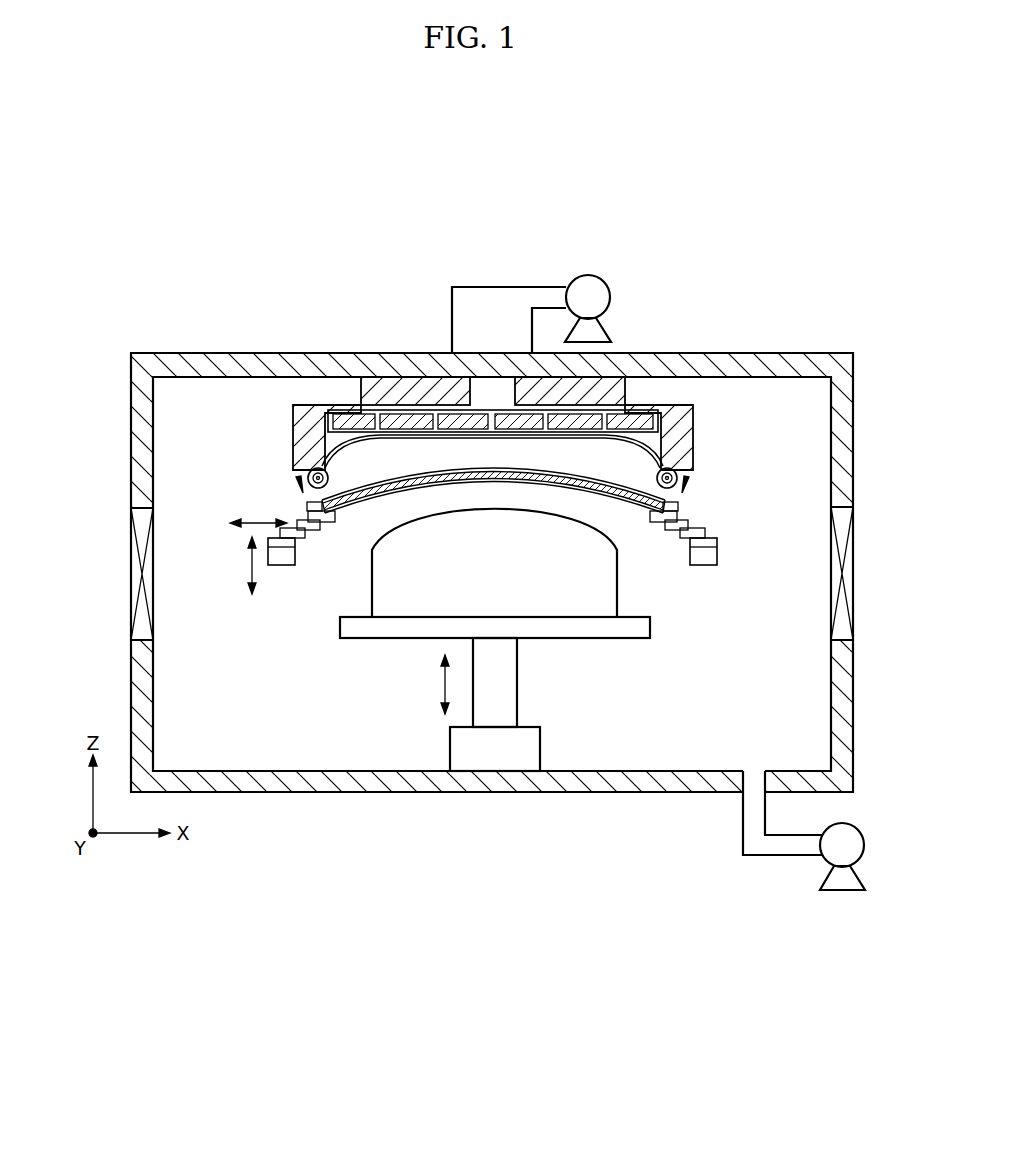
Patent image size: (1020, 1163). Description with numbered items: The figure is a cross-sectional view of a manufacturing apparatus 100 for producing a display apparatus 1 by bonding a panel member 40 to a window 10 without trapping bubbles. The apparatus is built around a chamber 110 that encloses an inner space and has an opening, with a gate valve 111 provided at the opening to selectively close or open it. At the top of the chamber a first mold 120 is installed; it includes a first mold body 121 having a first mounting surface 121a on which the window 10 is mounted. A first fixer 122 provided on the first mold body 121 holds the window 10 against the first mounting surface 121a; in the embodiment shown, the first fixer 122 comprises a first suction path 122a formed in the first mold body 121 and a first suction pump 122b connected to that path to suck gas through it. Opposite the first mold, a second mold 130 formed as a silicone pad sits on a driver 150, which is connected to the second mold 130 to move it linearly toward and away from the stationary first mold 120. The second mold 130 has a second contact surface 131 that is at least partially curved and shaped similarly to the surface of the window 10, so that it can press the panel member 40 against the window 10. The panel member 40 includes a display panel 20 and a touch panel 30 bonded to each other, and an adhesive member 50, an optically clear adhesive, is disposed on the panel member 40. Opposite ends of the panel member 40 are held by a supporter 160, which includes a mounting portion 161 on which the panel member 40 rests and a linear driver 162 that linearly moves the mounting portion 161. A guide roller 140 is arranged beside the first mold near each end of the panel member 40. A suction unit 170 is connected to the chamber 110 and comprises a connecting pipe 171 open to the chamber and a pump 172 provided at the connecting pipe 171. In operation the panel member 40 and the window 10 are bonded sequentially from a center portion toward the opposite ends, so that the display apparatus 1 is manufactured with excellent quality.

The display apparatus 1 is at (571, 523).
The window 10 is at (689, 455).
The display panel 20 is at (648, 512).
The touch panel 30 is at (660, 518).
The panel member 40 is at (557, 542).
The adhesive member 50 is at (683, 498).
The manufacturing apparatus 100 is at (272, 286).
The chamber 110 is at (797, 366).
The gate valve 111 is at (134, 580).
The first mold 120 is at (496, 308).
The first mold body 121 is at (690, 405).
The first mounting surface 121a is at (418, 405).
The first fixer 122 is at (557, 295).
The first suction path 122a is at (633, 405).
The first suction pump 122b is at (583, 284).
The second mold 130 is at (592, 603).
The second contact surface 131 is at (385, 532).
The guide roller 140 is at (298, 479).
The driver 150 is at (556, 745).
The supporter 160 is at (473, 605).
The mounting portion 161 is at (321, 524).
The linear driver 162 is at (284, 565).
The suction unit 170 is at (804, 882).
The connecting pipe 171 is at (785, 852).
The pump 172 is at (842, 885).